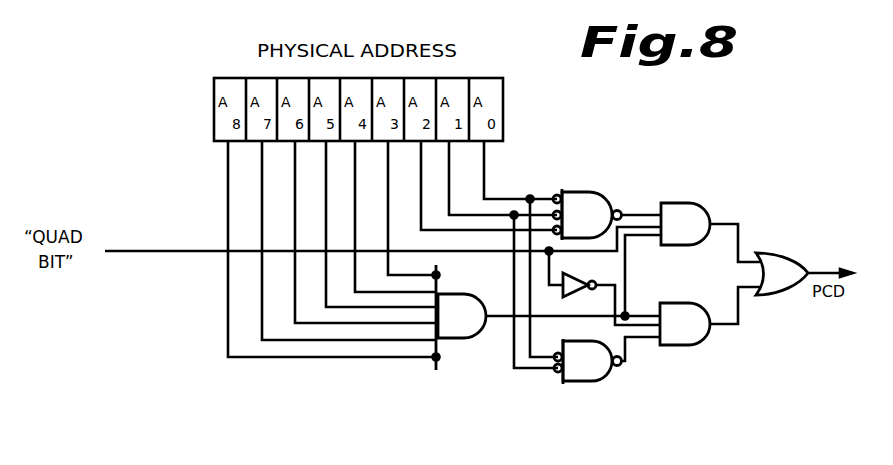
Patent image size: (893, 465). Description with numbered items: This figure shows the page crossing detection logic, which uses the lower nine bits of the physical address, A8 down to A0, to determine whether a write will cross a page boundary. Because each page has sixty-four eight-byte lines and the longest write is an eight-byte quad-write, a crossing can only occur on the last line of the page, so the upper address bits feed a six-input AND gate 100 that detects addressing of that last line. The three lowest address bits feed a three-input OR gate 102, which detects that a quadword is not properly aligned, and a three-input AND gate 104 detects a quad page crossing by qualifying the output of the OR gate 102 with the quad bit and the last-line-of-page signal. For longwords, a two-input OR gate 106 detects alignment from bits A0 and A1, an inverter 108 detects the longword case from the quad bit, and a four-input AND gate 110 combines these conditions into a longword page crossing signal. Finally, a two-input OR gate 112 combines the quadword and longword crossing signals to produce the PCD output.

The 6-input AND gate 100 is at (460, 294).
The 3-input OR gate 102 is at (588, 192).
The 3-input AND gate 104 is at (683, 203).
The 2-input OR gate 106 is at (580, 383).
The inverter 108 is at (569, 274).
The 4-input AND gate 110 is at (685, 345).
The 2-input OR gate 112 is at (776, 255).